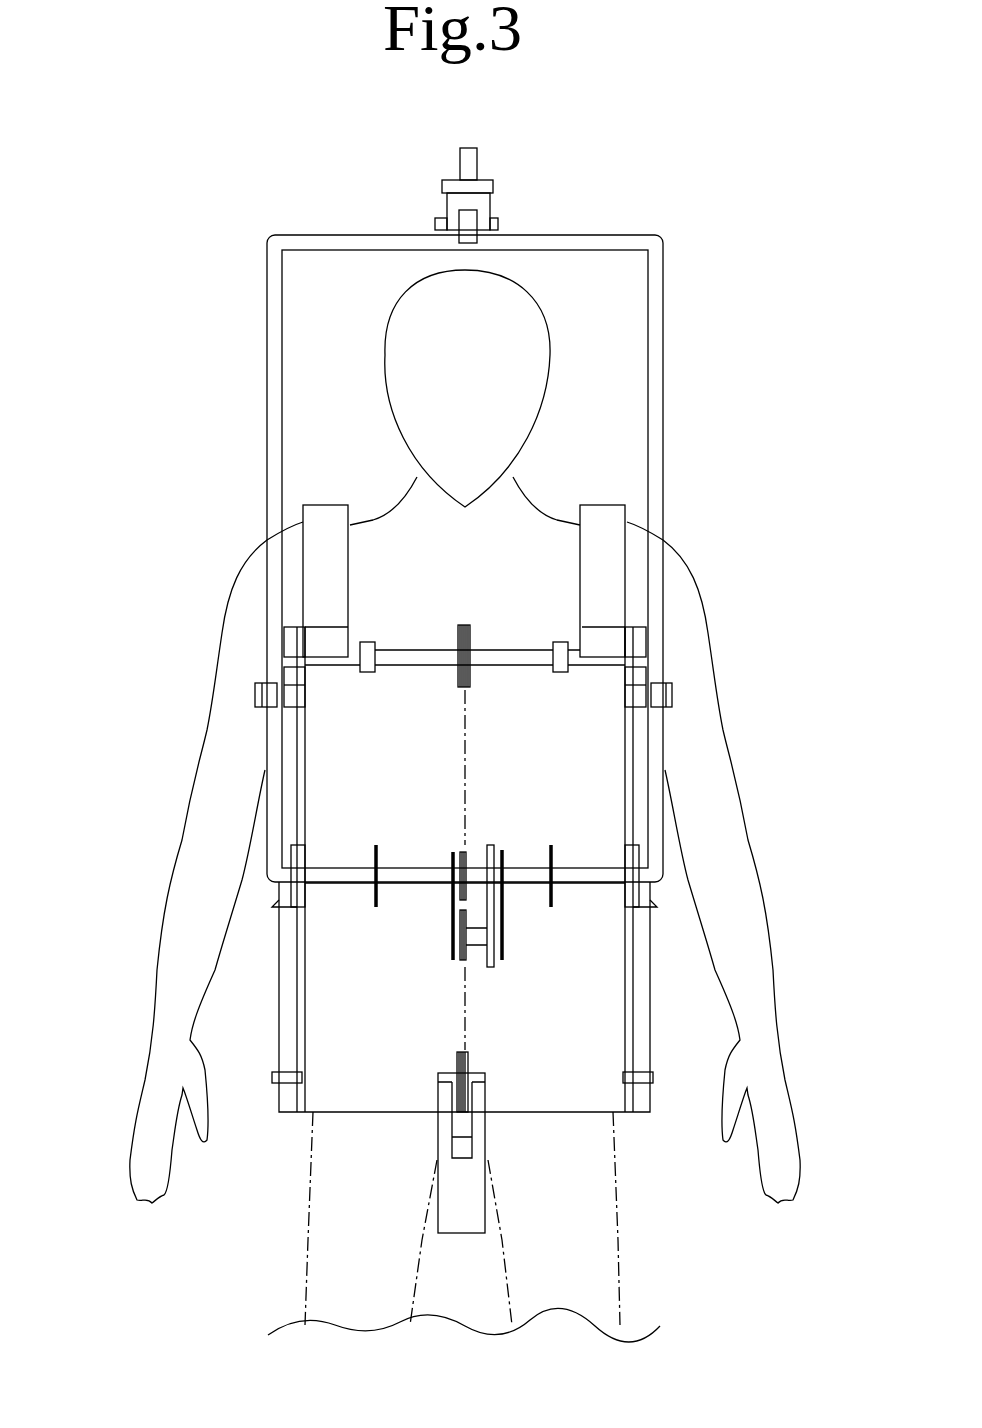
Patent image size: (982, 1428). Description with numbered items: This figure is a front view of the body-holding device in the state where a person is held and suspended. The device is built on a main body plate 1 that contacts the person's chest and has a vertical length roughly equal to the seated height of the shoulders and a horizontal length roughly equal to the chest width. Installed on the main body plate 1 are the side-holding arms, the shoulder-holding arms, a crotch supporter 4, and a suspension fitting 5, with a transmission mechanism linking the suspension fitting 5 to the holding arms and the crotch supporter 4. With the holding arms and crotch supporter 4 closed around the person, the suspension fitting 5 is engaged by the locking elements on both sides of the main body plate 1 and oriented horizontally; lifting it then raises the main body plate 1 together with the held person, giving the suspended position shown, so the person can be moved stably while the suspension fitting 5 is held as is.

The main body plate 1 is at (378, 1073).
The crotch supporter 4 is at (467, 1190).
The suspension fitting 5 is at (563, 243).